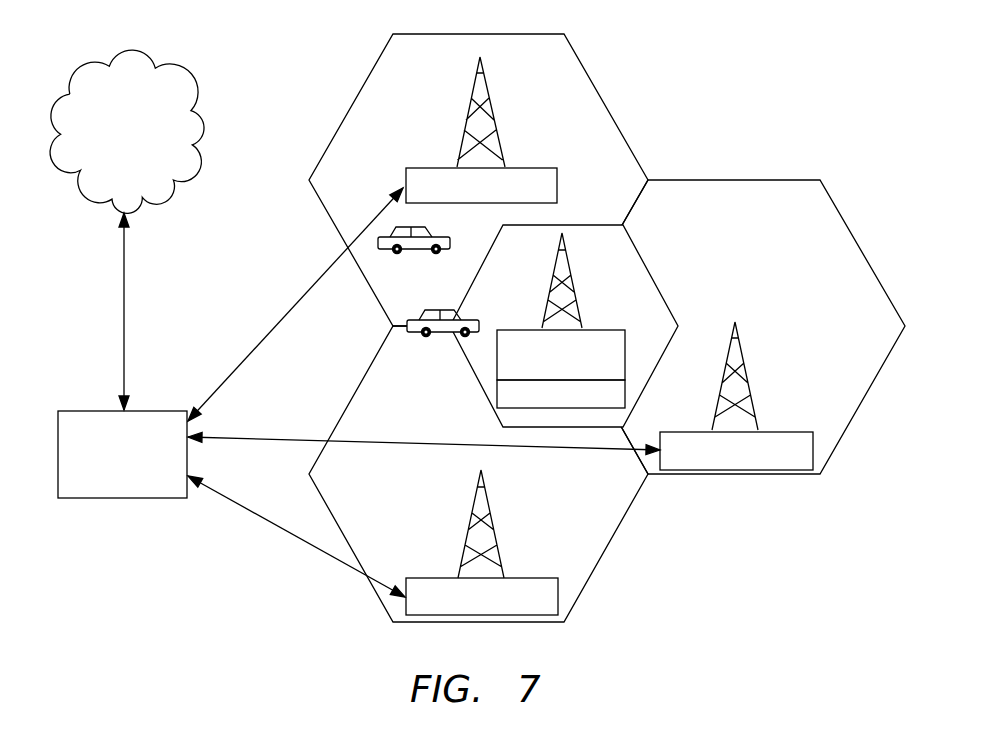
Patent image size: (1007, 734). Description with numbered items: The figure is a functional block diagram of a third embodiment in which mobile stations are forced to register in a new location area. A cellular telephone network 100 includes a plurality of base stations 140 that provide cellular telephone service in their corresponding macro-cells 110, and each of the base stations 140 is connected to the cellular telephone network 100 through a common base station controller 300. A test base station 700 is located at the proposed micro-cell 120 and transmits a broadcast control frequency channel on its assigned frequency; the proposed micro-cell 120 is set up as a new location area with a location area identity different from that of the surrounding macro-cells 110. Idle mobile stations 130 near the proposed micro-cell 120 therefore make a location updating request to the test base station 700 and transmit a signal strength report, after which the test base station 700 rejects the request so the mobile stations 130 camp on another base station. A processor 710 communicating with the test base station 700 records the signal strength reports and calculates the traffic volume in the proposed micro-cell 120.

The cellular telephone network 100 is at (175, 85).
The macro-cell 110 is at (580, 73).
The proposed micro-cell 120 is at (632, 238).
The mobile station 130 is at (410, 252).
The base station 140 is at (532, 167).
The base station controller 300 is at (157, 423).
The test base station 700 is at (622, 358).
The processor 710 is at (500, 390).